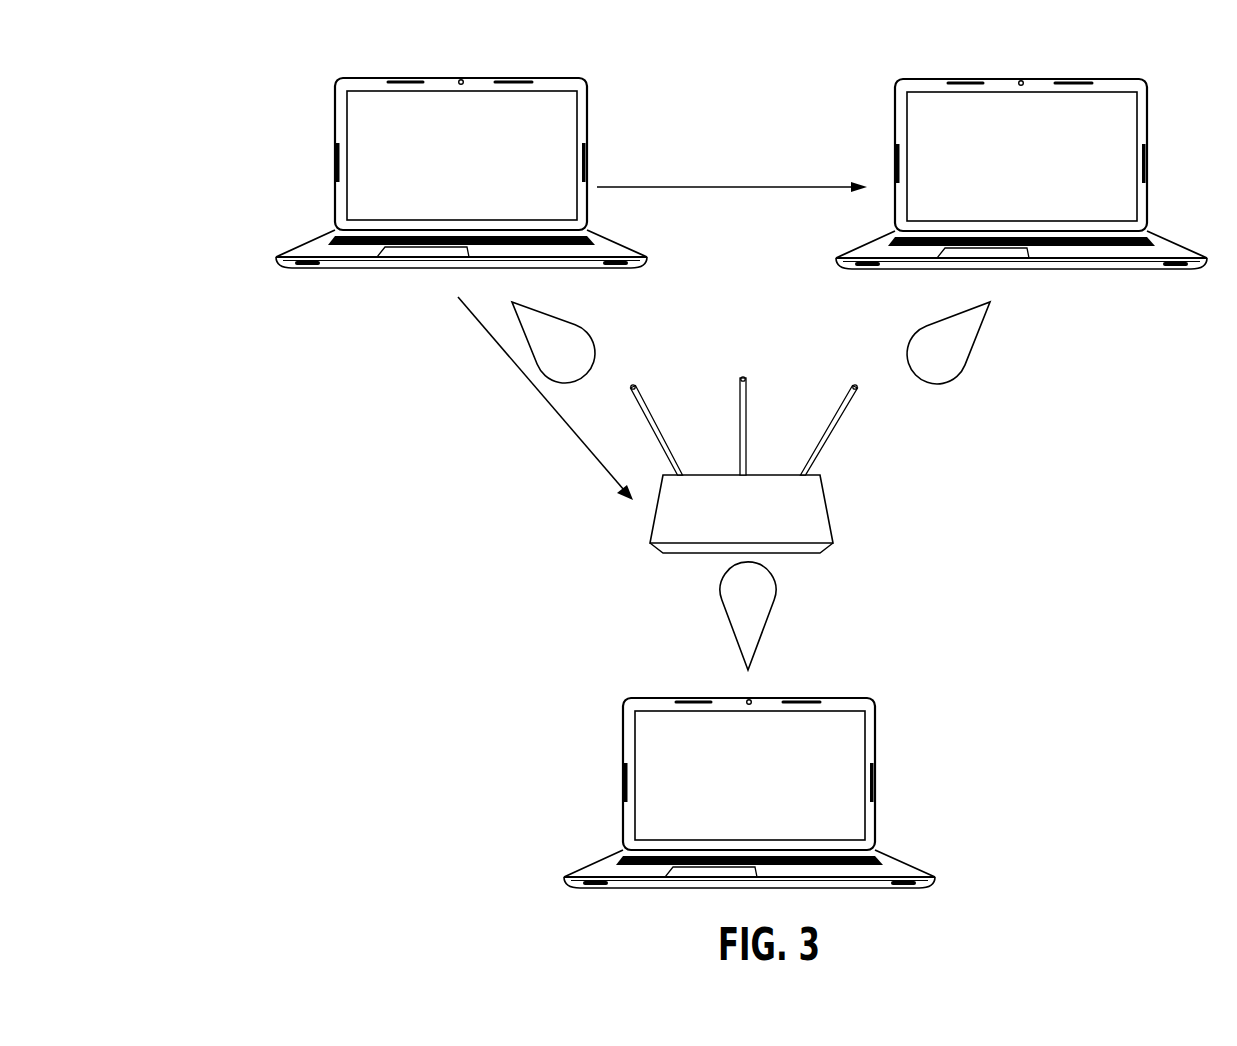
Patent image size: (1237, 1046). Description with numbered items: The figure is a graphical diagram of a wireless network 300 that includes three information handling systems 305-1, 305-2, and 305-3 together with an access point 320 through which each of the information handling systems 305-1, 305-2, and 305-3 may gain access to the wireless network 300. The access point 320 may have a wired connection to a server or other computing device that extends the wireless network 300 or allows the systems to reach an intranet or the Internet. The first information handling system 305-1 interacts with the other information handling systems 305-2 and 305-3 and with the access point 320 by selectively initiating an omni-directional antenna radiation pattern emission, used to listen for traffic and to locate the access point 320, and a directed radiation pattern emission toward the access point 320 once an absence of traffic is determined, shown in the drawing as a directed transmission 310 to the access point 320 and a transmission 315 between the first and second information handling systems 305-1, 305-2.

The wireless network 300 is at (237, 130).
The first information handling system 305-1 is at (550, 77).
The information handling system 305-2 is at (1124, 77).
The information handling system 305-3 is at (851, 697).
The transmission to access point 310 is at (542, 398).
The direct transmission between devices 315 is at (723, 187).
The access point 320 is at (812, 508).